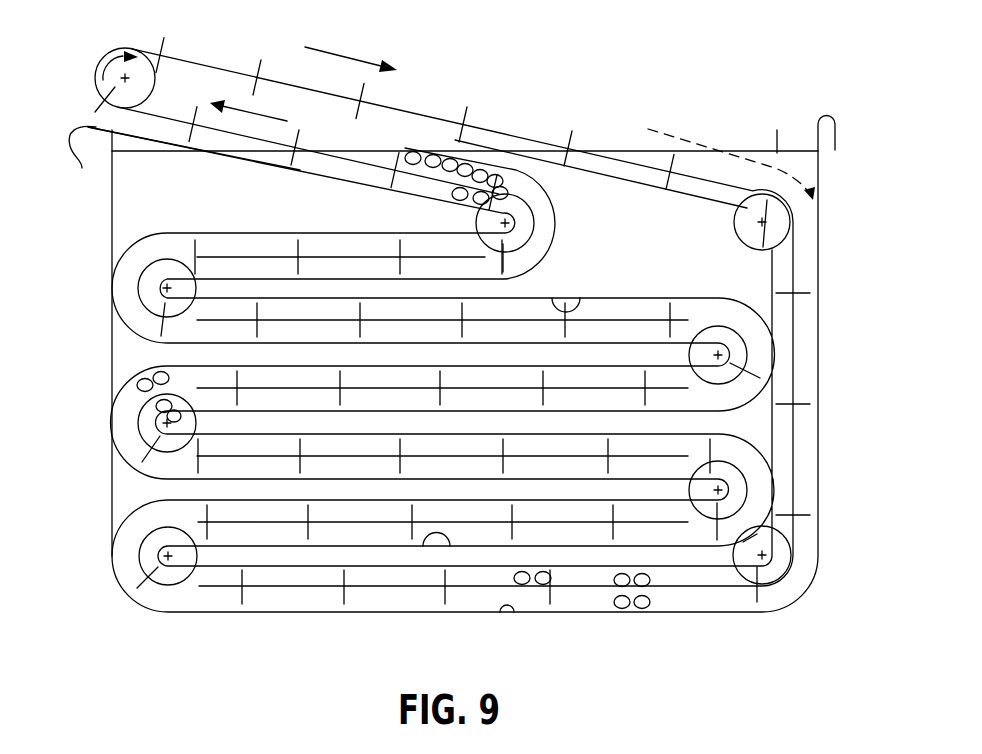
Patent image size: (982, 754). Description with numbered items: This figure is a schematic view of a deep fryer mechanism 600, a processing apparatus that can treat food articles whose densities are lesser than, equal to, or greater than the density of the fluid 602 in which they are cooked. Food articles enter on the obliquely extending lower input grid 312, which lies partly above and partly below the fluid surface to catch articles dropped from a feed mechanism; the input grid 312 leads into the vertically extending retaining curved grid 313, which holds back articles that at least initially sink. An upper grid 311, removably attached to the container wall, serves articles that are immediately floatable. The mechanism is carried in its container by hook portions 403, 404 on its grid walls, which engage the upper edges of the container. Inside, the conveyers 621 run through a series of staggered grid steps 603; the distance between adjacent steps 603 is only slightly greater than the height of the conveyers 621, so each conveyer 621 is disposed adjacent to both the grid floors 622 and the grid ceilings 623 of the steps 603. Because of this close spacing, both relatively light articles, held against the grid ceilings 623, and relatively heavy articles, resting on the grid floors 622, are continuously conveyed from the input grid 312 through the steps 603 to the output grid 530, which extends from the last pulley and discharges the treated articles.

The deep fryer mechanism 600 is at (95, 487).
The fluid 602 is at (720, 285).
The staggered grid steps 603 is at (203, 408).
The lower grid 312 is at (591, 176).
The output grid 530 is at (266, 162).
The hook portion 404 is at (81, 160).
The conveyers 621 is at (386, 181).
The grid floors 622 is at (452, 546).
The grid ceilings 623 is at (583, 302).
The upper grid 311 is at (648, 129).
The hook portion 403 is at (824, 118).
The retaining curved grid 313 is at (800, 177).